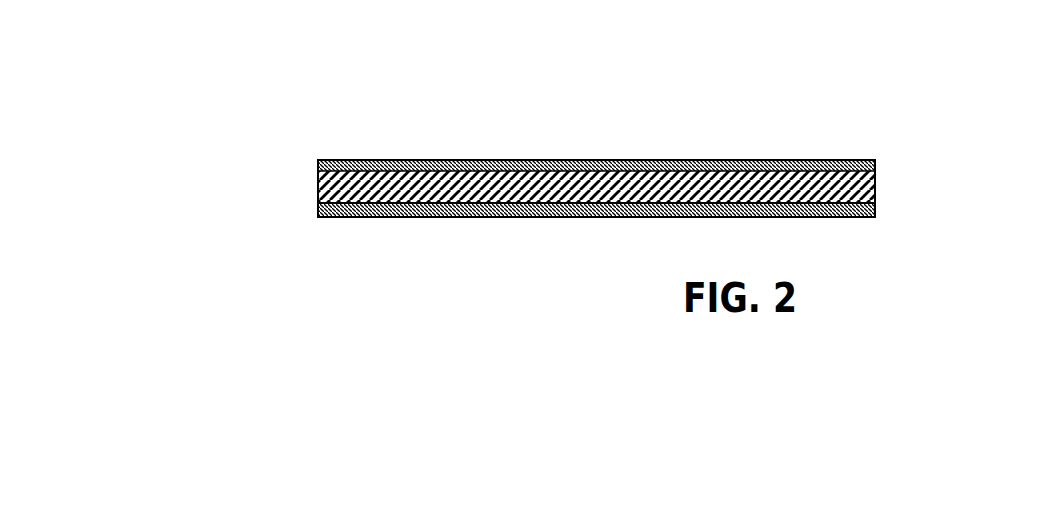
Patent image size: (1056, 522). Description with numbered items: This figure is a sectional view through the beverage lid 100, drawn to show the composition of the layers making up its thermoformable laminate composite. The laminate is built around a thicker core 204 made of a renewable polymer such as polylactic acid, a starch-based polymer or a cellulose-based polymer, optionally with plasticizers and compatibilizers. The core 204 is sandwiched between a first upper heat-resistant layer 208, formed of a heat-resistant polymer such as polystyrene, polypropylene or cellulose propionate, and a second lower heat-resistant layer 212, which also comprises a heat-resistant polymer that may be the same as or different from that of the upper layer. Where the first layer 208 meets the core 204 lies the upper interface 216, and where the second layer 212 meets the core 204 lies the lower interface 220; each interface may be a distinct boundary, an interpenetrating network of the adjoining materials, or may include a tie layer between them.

The beverage lid 100 is at (732, 82).
The core 204 is at (322, 190).
The first upper heat-resistant layer 208 is at (455, 159).
The second lower heat-resistant layer 212 is at (477, 214).
The upper interface 216 is at (878, 172).
The lower interface 220 is at (317, 202).